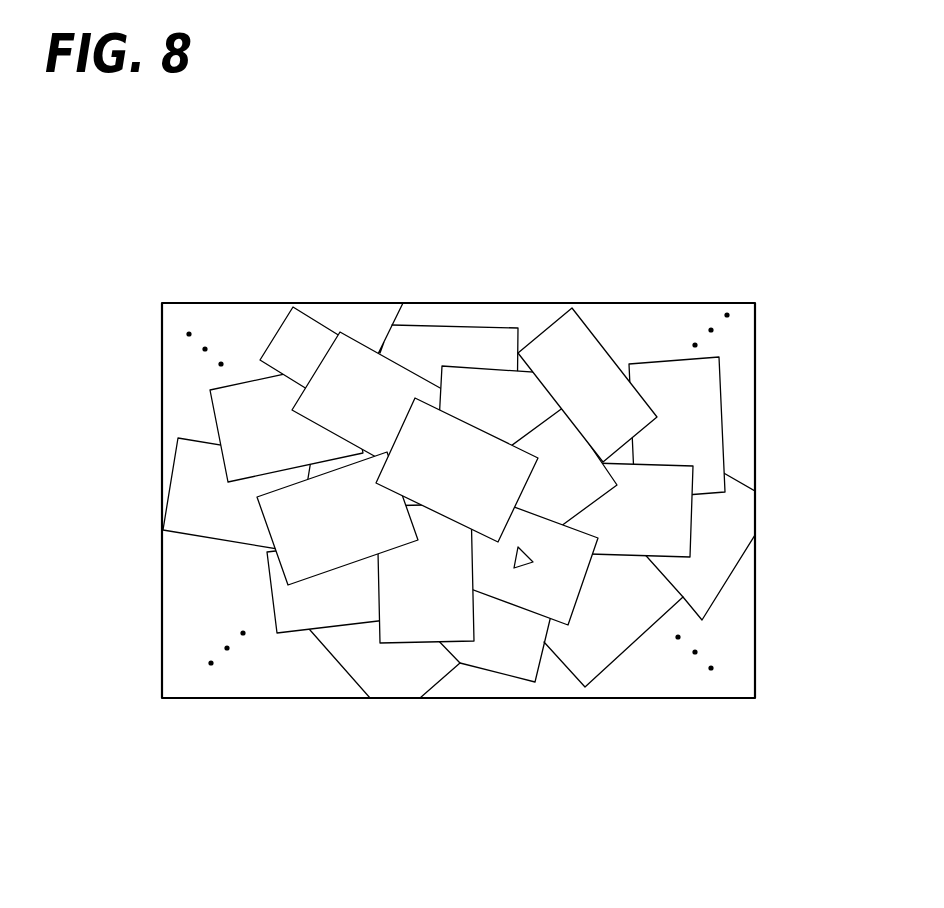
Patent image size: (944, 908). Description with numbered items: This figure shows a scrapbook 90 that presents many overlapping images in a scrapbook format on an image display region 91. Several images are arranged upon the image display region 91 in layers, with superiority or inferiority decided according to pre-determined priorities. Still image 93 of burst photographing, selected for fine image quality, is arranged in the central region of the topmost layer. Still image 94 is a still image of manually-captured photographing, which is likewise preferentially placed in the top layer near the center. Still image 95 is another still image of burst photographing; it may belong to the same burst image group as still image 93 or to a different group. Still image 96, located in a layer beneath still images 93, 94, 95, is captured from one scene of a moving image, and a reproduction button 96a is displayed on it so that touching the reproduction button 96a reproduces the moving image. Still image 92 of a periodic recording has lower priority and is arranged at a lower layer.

The scrapbook 90 is at (597, 165).
The image display region 91 is at (755, 362).
The still image of a periodic recording 92 is at (587, 385).
The still image of burst photographing 93 is at (457, 470).
The still image of manually-captured photographing 94 is at (337, 518).
The still image of burst photographing 95 is at (425, 573).
The still image 96 is at (519, 558).
The reproduction button 96a is at (528, 565).